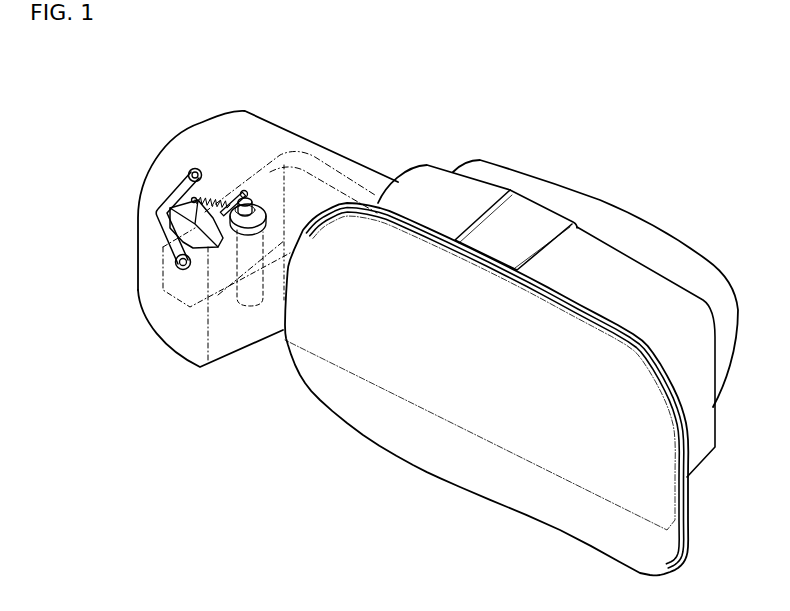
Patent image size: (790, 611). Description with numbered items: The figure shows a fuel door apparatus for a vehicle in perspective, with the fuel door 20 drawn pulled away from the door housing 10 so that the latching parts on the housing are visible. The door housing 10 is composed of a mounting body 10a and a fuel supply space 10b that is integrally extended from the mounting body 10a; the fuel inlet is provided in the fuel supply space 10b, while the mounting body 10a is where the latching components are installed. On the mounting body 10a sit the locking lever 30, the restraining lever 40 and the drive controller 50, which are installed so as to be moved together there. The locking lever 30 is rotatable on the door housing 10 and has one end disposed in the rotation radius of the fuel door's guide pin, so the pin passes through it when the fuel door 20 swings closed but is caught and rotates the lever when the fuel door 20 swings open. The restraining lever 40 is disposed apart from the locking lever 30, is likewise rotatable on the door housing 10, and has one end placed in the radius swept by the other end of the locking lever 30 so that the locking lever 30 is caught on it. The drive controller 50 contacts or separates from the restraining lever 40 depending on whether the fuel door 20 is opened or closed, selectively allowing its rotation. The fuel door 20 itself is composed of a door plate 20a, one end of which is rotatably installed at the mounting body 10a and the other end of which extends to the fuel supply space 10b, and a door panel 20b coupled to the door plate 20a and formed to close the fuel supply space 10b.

The door housing 10 is at (438, 268).
The mounting body 10a is at (248, 128).
The fuel supply space 10b is at (593, 210).
The fuel door 20 is at (446, 319).
The door plate 20a is at (298, 157).
The door panel 20b is at (497, 497).
The locking lever 30 is at (208, 258).
The restraining lever 40 is at (148, 221).
The drive controller 50 is at (168, 286).